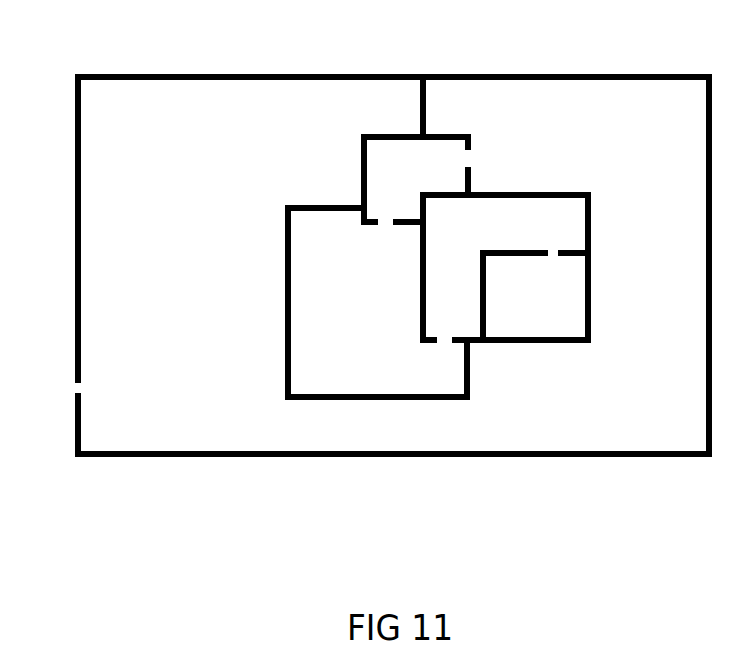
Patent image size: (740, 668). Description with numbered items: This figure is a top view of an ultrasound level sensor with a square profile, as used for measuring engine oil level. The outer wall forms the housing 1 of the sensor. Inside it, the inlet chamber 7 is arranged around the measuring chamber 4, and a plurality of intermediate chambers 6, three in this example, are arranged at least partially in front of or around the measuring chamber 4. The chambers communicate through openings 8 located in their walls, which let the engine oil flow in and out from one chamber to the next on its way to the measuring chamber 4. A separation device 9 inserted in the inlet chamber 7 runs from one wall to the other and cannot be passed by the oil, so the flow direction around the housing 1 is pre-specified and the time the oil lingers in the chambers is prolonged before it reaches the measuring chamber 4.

The housing 1 is at (76, 162).
The measuring chamber 4 is at (543, 325).
The intermediate chamber 6 is at (380, 165).
The inlet chamber 7 is at (213, 425).
The opening 8 is at (547, 253).
The separation device 9 is at (420, 110).